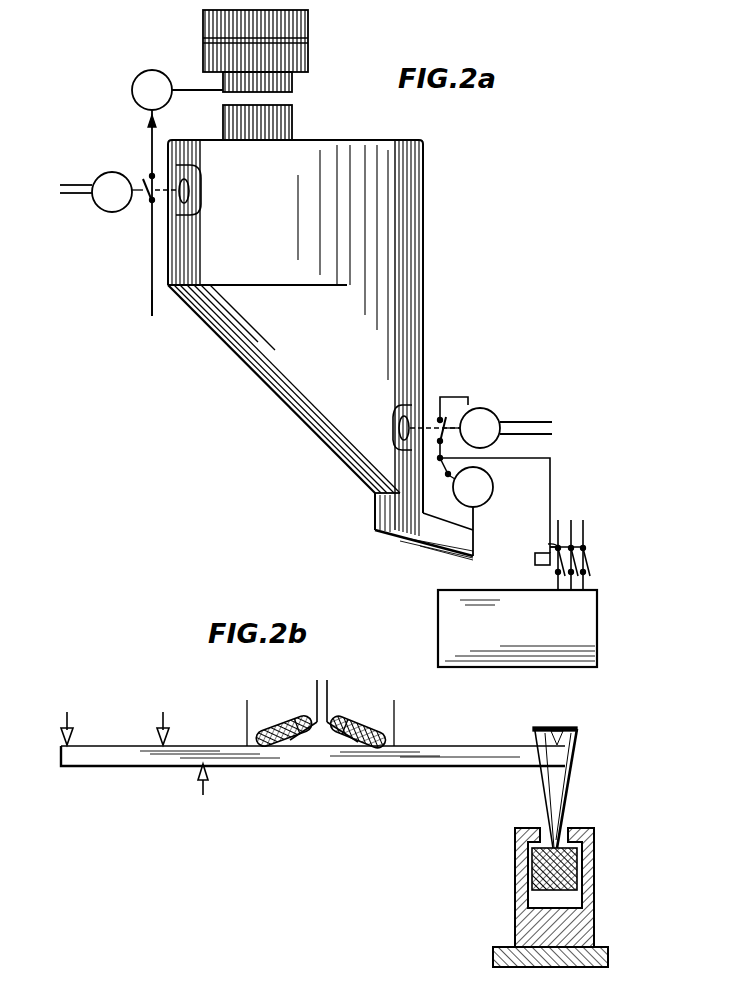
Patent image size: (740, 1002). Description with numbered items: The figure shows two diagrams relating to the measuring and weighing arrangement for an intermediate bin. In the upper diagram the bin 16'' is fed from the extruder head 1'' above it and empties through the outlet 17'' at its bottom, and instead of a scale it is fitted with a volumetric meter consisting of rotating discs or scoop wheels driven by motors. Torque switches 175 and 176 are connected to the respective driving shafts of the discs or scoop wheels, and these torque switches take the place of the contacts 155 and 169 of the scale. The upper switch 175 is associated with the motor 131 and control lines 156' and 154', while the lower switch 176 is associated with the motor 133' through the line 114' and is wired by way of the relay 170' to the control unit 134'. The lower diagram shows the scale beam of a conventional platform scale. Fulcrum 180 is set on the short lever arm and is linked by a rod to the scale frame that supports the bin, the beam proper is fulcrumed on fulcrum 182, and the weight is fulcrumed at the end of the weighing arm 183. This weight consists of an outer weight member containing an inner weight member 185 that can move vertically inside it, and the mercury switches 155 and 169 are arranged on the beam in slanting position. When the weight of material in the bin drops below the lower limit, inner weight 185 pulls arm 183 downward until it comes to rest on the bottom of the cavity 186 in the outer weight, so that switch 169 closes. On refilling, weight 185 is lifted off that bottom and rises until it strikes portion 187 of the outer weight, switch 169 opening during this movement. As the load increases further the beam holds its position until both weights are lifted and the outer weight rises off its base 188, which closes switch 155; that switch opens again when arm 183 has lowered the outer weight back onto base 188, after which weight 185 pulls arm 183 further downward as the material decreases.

In FIG. 2A, the extruder head 1'' is at (272, 75).
In FIG. 2A, the hopper 16'' is at (320, 350).
In FIG. 2A, the outlet chute 17'' is at (436, 563).
In FIG. 2A, the motor 131 is at (145, 72).
In FIG. 2A, the control line 156' is at (129, 215).
In FIG. 2A, the torque switch 175 is at (140, 200).
In FIG. 2A, the control line 154' is at (128, 301).
In FIG. 2A, the control line 114' is at (467, 392).
In FIG. 2A, the torque switch 176 is at (438, 440).
In FIG. 2A, the motor 133' is at (497, 498).
In FIG. 2A, the relay 170' is at (512, 521).
In FIG. 2A, the control unit 134' is at (544, 593).
In FIG. 2B, the fulcrum 180 is at (124, 754).
In FIG. 2B, the fulcrum 182 is at (210, 790).
In FIG. 2B, the weighing arm 183 is at (362, 758).
In FIG. 2B, the mercury switch 169 is at (276, 724).
In FIG. 2B, the mercury switch 155 is at (368, 724).
In FIG. 2B, the portion of the outer weight 187 is at (523, 827).
In FIG. 2B, the inner weight member 185 is at (578, 855).
In FIG. 2B, the mold cavity 186 is at (570, 902).
In FIG. 2B, the base 188 is at (505, 945).